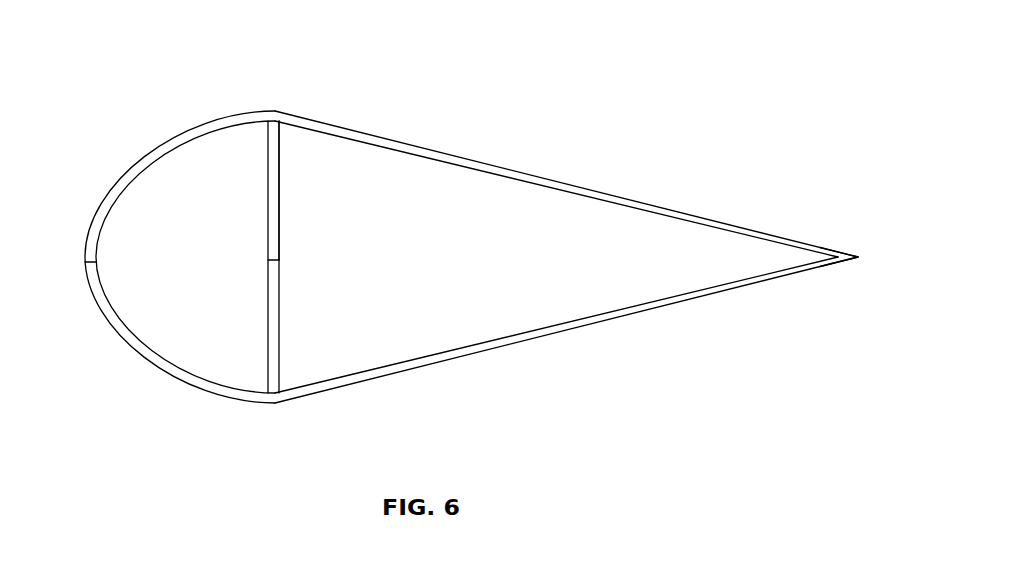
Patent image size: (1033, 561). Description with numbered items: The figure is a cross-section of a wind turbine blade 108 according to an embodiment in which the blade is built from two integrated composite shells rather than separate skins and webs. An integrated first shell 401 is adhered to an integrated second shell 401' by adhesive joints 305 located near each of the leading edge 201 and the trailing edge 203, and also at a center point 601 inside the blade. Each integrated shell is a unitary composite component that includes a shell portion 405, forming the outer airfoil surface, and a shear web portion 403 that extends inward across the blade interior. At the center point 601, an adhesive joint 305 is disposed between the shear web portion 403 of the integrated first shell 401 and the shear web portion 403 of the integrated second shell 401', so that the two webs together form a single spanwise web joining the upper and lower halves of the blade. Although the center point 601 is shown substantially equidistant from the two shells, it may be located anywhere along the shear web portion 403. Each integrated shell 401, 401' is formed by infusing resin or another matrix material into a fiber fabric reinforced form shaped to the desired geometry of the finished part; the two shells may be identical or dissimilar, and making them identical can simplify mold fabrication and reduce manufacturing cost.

The wind turbine blade 108 is at (137, 53).
The leading edge 201 is at (95, 187).
The trailing edge 203 is at (797, 288).
The adhesive joint 305 is at (93, 264).
The integrated first shell 401 is at (566, 331).
The integrated second shell 401' is at (566, 184).
The shear web portion 403 is at (287, 280).
The shell portion 405 is at (552, 313).
The center point 601 is at (287, 240).